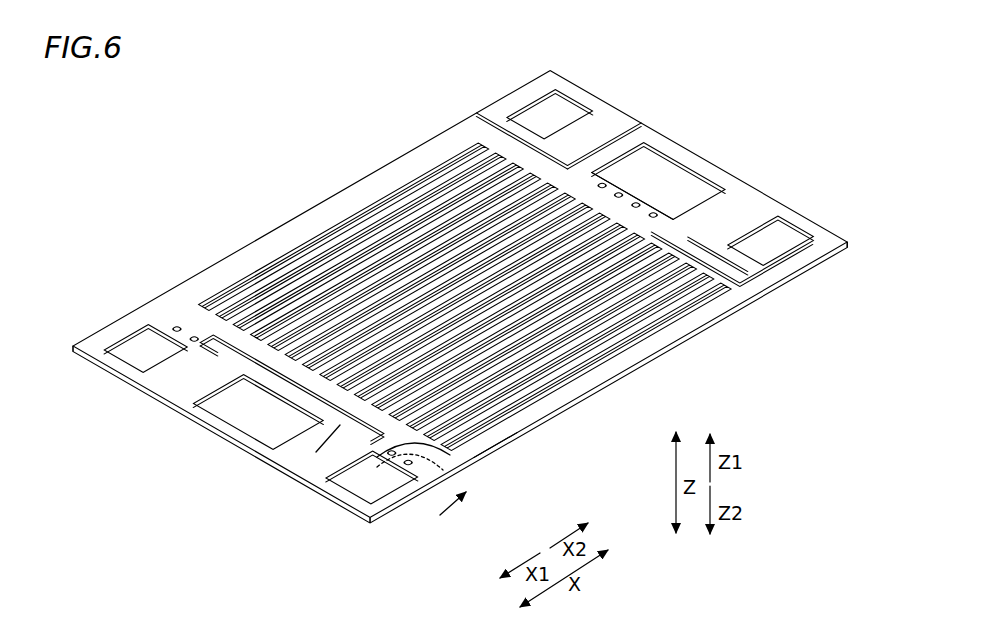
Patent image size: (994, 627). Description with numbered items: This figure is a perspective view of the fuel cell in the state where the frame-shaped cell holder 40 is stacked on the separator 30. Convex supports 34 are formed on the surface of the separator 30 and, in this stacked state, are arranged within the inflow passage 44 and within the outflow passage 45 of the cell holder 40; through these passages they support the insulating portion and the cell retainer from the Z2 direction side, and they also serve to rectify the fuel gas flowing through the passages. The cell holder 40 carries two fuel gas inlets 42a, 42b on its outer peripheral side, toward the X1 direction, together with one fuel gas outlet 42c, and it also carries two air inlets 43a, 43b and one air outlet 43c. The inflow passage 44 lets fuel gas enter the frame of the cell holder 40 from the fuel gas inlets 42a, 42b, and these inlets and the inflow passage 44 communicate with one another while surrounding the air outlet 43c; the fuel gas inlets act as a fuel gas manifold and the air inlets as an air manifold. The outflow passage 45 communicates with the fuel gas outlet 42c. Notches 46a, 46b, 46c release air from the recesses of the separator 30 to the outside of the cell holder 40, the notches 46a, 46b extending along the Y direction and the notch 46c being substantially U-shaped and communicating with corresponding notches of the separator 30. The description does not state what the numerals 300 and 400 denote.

The separator 30 is at (787, 281).
The cell holder 40 is at (742, 196).
The convex supports 34 is at (655, 212).
The fuel gas inlet 42a is at (345, 488).
The fuel gas inlet 42b is at (125, 358).
The fuel gas outlet 42c is at (665, 150).
The air inlet 43a is at (795, 232).
The air inlet 43b is at (558, 100).
The air outlet 43c is at (235, 420).
The inflow passage 44 is at (478, 440).
The outflow passage 45 is at (603, 172).
The notch 46a is at (743, 273).
The notch 46b is at (488, 128).
The notch 46c is at (213, 352).
The bonding material 300 is at (473, 413).
The insertion direction 400 is at (377, 481).